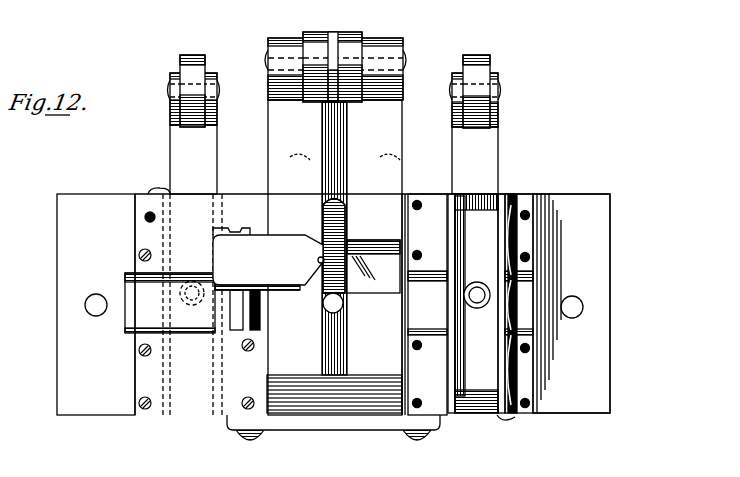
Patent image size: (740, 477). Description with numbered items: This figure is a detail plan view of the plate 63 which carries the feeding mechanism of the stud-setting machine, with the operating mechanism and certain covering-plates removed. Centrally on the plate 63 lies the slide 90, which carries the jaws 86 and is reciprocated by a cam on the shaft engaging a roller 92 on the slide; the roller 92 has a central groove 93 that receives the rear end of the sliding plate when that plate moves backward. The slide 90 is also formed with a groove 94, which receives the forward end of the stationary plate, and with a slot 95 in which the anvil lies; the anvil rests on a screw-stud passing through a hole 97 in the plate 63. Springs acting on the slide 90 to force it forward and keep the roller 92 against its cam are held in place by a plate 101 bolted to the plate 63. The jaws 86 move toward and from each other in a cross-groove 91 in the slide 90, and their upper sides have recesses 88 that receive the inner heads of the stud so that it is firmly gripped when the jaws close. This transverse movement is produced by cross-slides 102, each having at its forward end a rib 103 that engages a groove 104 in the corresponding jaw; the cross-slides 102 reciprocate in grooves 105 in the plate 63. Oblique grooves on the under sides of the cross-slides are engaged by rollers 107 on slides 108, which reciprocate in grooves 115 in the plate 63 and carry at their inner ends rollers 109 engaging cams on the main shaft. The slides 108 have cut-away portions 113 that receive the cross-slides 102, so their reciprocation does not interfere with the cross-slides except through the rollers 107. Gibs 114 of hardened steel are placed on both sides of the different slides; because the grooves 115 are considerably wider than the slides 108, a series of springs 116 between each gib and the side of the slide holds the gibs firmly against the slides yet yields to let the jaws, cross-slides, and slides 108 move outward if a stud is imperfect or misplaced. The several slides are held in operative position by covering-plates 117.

The plate 63 is at (333, 304).
The jaws 86 is at (268, 262).
The recesses 88 is at (319, 264).
The slide 90 is at (334, 257).
The cross-groove 91 is at (373, 266).
The roller 92 is at (350, 56).
The central groove 93 is at (332, 42).
The groove 94 is at (340, 150).
The slot 95 is at (345, 228).
The hole 97 is at (342, 308).
The plate 101 is at (328, 426).
The cross-slides 102 is at (170, 302).
The rib 103 is at (238, 325).
The groove 104 is at (232, 243).
The grooves 105 is at (532, 292).
The rollers 107 is at (477, 283).
The slides 108 is at (185, 170).
The rollers 109 is at (200, 80).
The cut-away portions 113 is at (476, 303).
The gibs 114 is at (192, 308).
The grooves 115 is at (472, 412).
The springs 116 is at (515, 228).
The covering-plates 117 is at (194, 304).